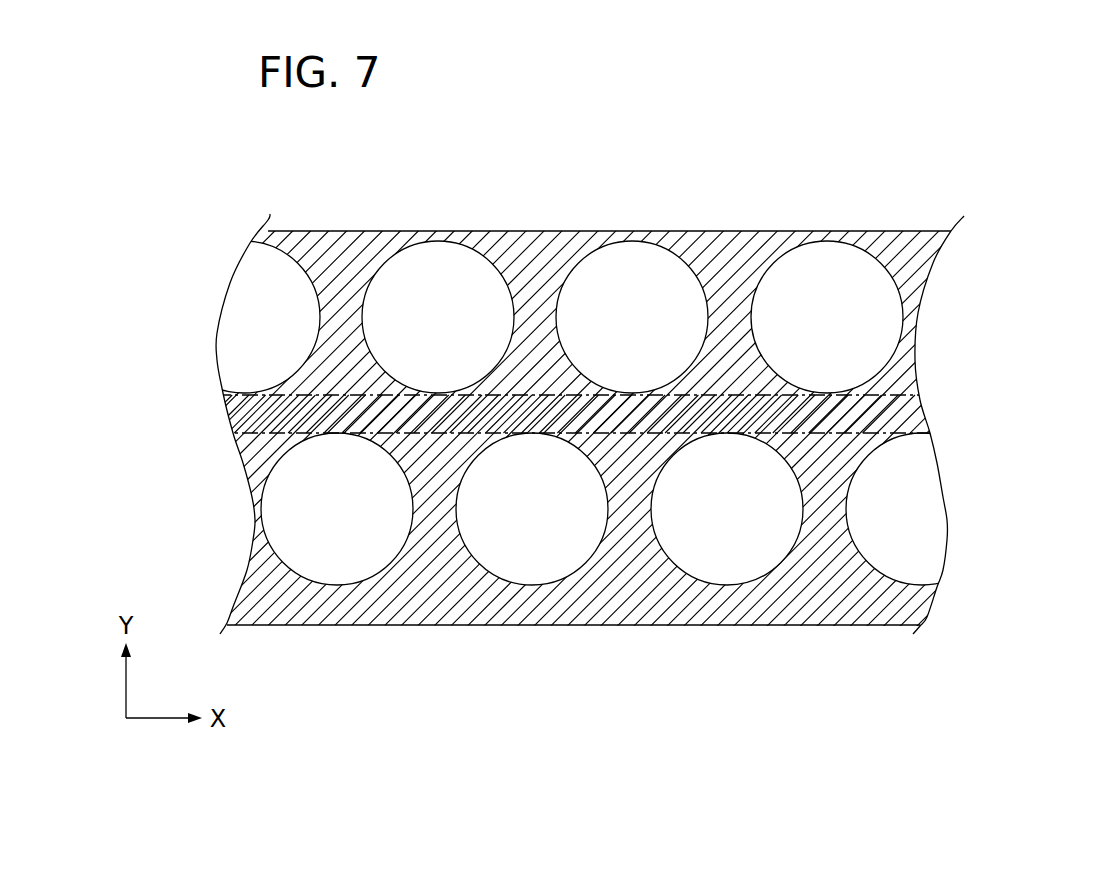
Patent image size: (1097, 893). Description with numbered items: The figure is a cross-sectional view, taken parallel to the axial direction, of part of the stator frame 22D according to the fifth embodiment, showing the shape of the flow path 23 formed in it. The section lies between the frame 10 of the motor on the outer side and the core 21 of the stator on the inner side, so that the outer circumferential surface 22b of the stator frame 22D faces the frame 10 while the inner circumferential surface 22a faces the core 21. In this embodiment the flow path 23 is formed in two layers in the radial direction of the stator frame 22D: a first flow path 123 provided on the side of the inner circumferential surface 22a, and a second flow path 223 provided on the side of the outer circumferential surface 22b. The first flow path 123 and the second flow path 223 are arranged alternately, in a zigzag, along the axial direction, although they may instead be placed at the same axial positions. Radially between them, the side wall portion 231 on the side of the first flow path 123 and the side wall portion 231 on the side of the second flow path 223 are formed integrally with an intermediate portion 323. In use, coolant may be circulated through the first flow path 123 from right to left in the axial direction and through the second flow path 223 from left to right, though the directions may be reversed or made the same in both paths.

The frame 10 is at (630, 98).
The core 21 is at (632, 757).
The stator frame 22D is at (548, 418).
The inner circumferential surface 22a is at (873, 627).
The outer circumferential surface 22b is at (798, 231).
The flow path 23 is at (628, 413).
The second flow path 223 is at (877, 326).
The intermediate portion 323 is at (937, 406).
The first flow path 123 is at (644, 509).
The side wall portion 231 is at (722, 277).